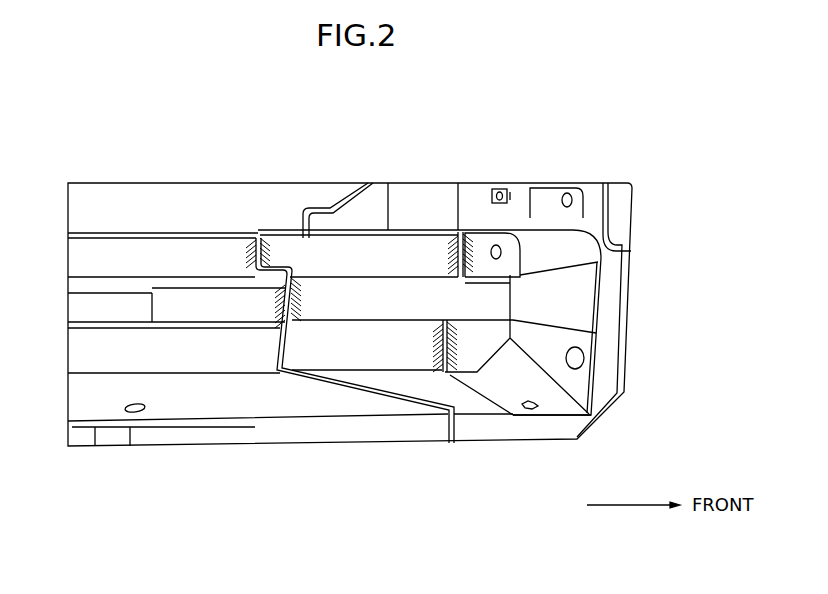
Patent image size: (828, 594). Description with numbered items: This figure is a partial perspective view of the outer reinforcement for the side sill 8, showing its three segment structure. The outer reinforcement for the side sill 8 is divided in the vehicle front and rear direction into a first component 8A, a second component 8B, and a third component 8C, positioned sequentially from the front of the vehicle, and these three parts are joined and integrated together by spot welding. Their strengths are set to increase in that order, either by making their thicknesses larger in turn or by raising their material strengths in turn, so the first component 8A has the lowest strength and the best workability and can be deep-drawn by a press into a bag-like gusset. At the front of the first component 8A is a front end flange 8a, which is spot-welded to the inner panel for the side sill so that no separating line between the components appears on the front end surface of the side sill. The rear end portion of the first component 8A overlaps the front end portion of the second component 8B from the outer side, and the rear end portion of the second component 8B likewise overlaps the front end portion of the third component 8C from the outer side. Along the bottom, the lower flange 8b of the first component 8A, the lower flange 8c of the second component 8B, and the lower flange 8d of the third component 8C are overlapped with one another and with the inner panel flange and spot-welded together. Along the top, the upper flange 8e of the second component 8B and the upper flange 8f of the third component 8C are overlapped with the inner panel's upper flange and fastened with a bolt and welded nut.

The outer reinforcement for the side sill 8 is at (98, 397).
The front end flange 8a is at (610, 353).
The lower flange 8b is at (567, 443).
The lower flange 8c is at (482, 437).
The lower flange 8d is at (283, 436).
The upper flange 8e is at (427, 199).
The upper flange 8f is at (243, 197).
The first component 8A is at (547, 412).
The second component 8B is at (437, 402).
The third component 8C is at (222, 412).